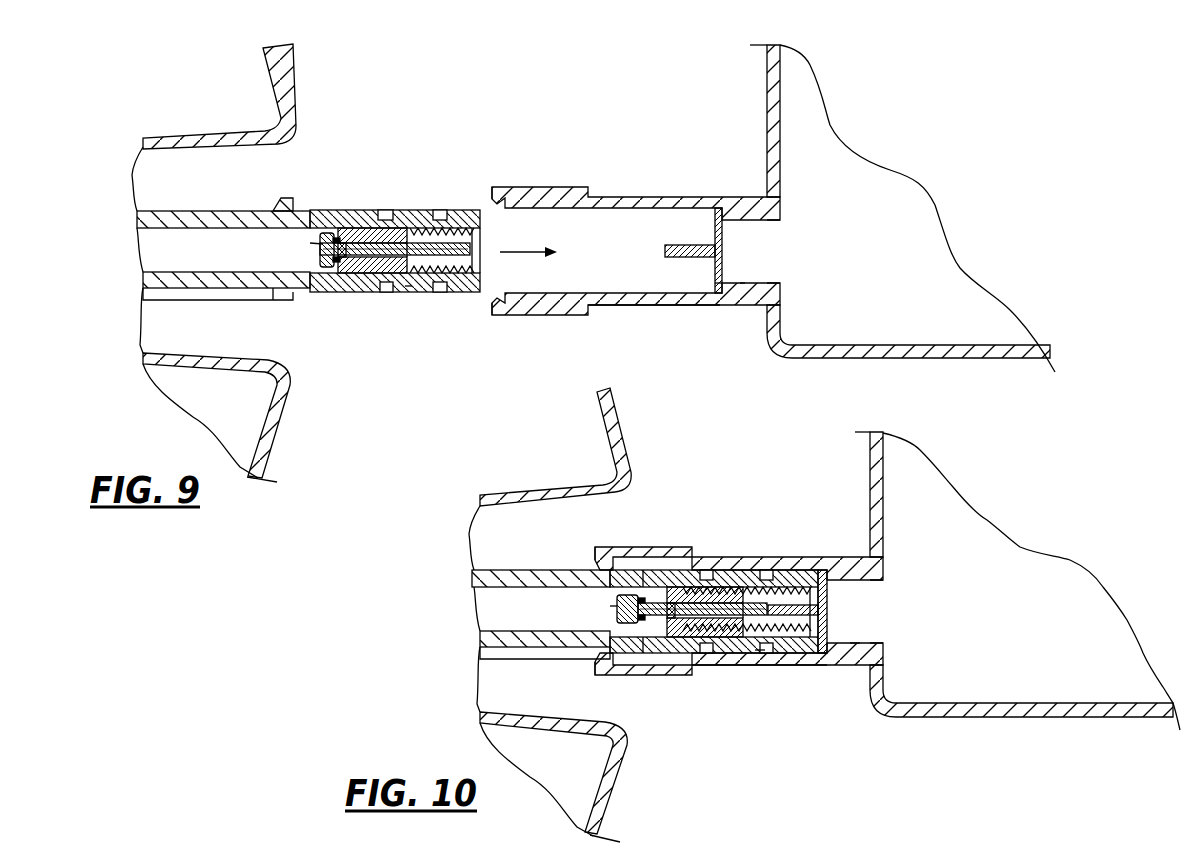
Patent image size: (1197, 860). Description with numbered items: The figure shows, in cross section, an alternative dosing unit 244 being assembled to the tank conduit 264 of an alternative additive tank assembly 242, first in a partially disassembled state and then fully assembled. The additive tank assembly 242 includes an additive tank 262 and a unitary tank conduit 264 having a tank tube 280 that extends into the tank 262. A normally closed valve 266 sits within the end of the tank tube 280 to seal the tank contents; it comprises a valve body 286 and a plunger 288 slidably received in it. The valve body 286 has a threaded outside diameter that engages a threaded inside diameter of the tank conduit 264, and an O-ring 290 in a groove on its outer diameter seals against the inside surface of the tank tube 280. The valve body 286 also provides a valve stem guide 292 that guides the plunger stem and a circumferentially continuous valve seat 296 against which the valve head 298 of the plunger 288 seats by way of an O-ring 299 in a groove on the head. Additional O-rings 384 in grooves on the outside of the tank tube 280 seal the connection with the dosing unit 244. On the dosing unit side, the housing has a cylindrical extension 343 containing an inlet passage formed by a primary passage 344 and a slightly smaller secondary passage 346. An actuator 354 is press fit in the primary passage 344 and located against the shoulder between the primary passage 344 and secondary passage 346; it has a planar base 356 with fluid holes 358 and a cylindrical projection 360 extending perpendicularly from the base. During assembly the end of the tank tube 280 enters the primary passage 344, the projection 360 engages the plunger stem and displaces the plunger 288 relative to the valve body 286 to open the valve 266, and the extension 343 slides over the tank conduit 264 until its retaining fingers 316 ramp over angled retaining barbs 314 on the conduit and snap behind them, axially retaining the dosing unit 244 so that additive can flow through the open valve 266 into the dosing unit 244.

In FIG. 9, the additive tank assembly 242 is at (117, 124).
In FIG. 10, the additive tank assembly 242 is at (456, 484).
In FIG. 9, the dosing unit 244 is at (755, 110).
In FIG. 10, the dosing unit 244 is at (935, 745).
In FIG. 9, the additive tank 262 is at (287, 80).
In FIG. 10, the additive tank 262 is at (622, 442).
In FIG. 9, the tank conduit 264 is at (302, 188).
In FIG. 10, the tank conduit 264 is at (695, 475).
In FIG. 9, the valve 266 is at (413, 212).
In FIG. 10, the valve 266 is at (747, 570).
In FIG. 9, the tank tube 280 is at (177, 211).
In FIG. 10, the tank tube 280 is at (517, 570).
In FIG. 9, the valve body 286 is at (420, 267).
In FIG. 10, the valve body 286 is at (747, 631).
In FIG. 9, the plunger 288 is at (360, 211).
In FIG. 10, the plunger 288 is at (685, 550).
In FIG. 9, the O-ring 290 is at (338, 268).
In FIG. 10, the O-ring 290 is at (640, 625).
In FIG. 9, the valve stem guide 292 is at (388, 208).
In FIG. 10, the valve stem guide 292 is at (730, 570).
In FIG. 10, the valve seat 296 is at (647, 565).
In FIG. 9, the valve head 298 is at (323, 244).
In FIG. 10, the valve head 298 is at (622, 607).
In FIG. 9, the O-ring 299 is at (327, 270).
In FIG. 10, the O-ring 299 is at (675, 625).
In FIG. 9, the retaining barbs 314 is at (273, 208).
In FIG. 10, the retaining barbs 314 is at (607, 553).
In FIG. 9, the retaining fingers 316 is at (500, 200).
In FIG. 10, the retaining fingers 316 is at (600, 540).
In FIG. 9, the cylindrical extension 343 is at (592, 197).
In FIG. 10, the cylindrical extension 343 is at (693, 557).
In FIG. 9, the primary passage 344 is at (627, 283).
In FIG. 10, the primary passage 344 is at (697, 652).
In FIG. 9, the secondary passage 346 is at (743, 273).
In FIG. 10, the secondary passage 346 is at (858, 625).
In FIG. 9, the actuator 354 is at (755, 233).
In FIG. 10, the actuator 354 is at (858, 595).
In FIG. 9, the planar base 356 is at (720, 208).
In FIG. 10, the planar base 356 is at (823, 570).
In FIG. 9, the fluid holes 358 is at (715, 293).
In FIG. 10, the fluid holes 358 is at (823, 660).
In FIG. 9, the cylindrical projection 360 is at (678, 244).
In FIG. 10, the cylindrical projection 360 is at (783, 570).
In FIG. 9, the O-rings 384 is at (410, 293).
In FIG. 10, the O-rings 384 is at (760, 650).